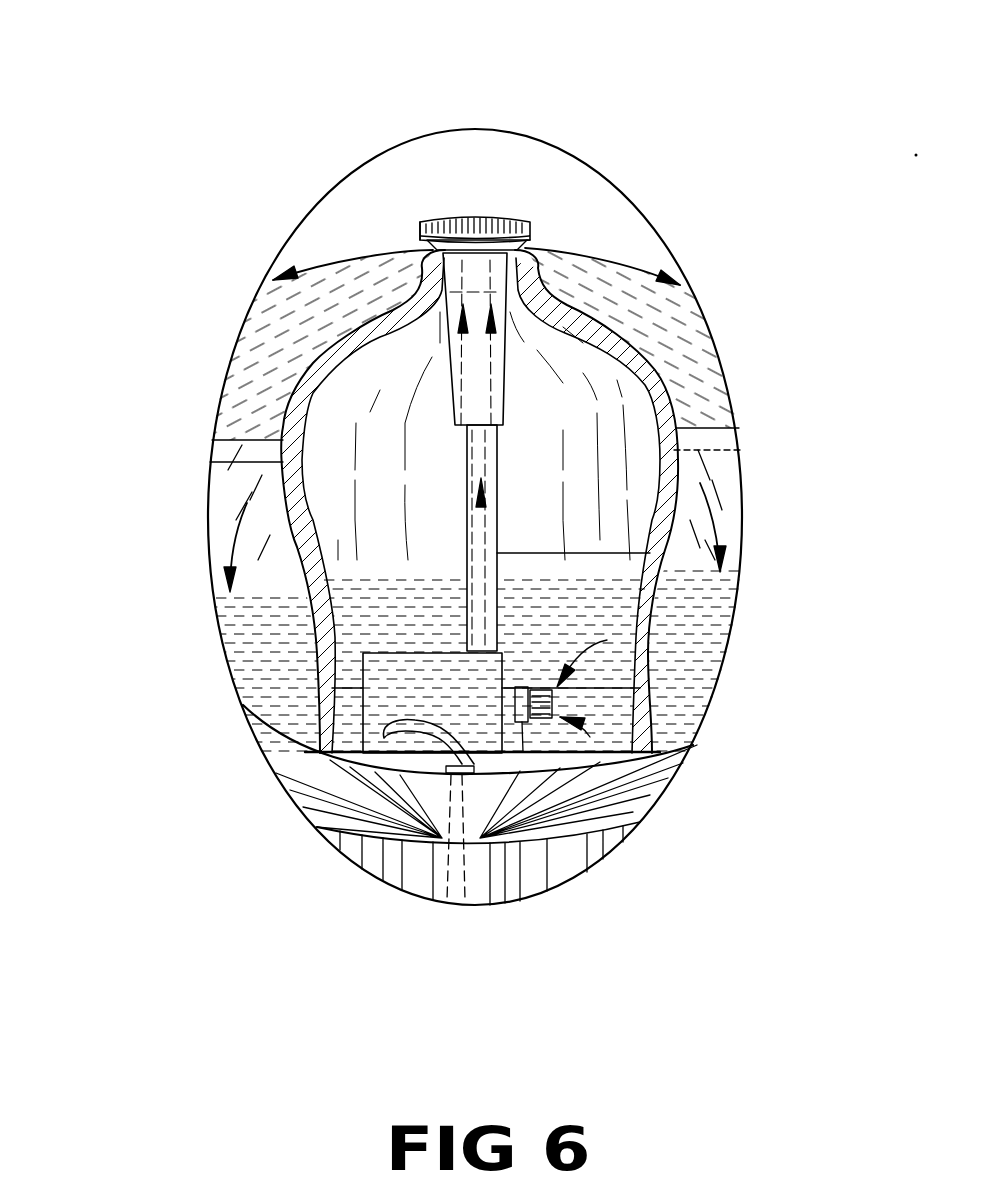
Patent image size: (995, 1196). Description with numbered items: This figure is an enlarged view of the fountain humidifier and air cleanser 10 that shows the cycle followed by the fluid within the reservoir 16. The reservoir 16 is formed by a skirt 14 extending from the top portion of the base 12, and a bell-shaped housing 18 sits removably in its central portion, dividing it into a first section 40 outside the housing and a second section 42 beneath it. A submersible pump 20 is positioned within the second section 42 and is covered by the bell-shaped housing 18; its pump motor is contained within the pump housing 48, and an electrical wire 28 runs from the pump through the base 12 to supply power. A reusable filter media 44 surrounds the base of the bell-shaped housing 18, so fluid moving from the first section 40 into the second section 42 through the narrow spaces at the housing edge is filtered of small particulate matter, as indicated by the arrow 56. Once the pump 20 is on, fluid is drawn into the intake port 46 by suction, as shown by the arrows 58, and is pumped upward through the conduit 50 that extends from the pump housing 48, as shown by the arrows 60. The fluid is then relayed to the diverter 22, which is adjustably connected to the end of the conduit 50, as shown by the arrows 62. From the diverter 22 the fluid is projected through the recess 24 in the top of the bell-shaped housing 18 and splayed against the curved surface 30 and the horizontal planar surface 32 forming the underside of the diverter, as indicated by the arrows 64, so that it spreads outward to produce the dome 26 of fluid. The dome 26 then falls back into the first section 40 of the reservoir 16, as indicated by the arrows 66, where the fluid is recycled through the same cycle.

The fountain humidifier and air cleanser 10 is at (203, 343).
The base 12 is at (400, 848).
The skirt 14 is at (350, 765).
The reservoir 16 is at (735, 465).
The bell-shaped housing 18 is at (313, 700).
The submersible pump 20 is at (417, 677).
The diverter 22 is at (472, 222).
The recess 24 is at (530, 250).
The dome 26 is at (680, 293).
The electrical wire 28 is at (436, 850).
The curved surface 30 is at (473, 242).
The horizontal planar surface 32 is at (420, 235).
The first section 40 is at (255, 668).
The second section 42 is at (415, 765).
The reusable filter media 44 is at (662, 745).
The intake port 46 is at (522, 725).
The pump housing 48 is at (489, 757).
The conduit 50 is at (497, 524).
The arrow indicating fluid flow into second section 56 is at (553, 703).
The arrows indicating fluid drawn into intake port 58 is at (590, 737).
The arrows indicating fluid pumped through conduit 60 is at (650, 553).
The arrows indicating fluid relayed to diverter 62 is at (493, 355).
The arrows indicating fluid projected against diverter surfaces 64 is at (600, 250).
The arrows indicating fluid falling into first section 66 is at (737, 503).